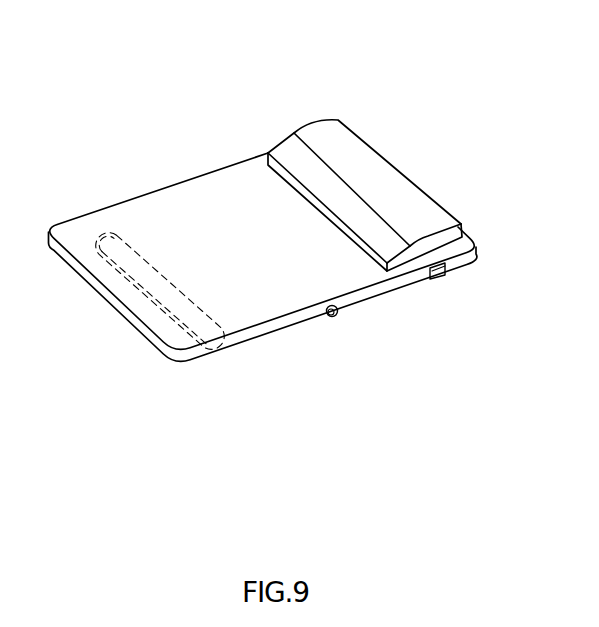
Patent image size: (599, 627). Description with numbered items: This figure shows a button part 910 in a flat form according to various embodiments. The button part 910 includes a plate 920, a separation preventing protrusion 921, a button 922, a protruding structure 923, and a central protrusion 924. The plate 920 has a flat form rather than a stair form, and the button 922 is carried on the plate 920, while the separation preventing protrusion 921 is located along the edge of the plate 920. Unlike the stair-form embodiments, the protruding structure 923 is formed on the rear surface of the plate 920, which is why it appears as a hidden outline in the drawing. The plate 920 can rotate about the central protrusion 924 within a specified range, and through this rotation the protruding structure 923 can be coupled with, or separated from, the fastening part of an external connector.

The button part 910 is at (362, 105).
The plate 920 is at (193, 200).
The separation preventing protrusion 921 is at (433, 278).
The button 922 is at (387, 183).
The protruding structure 923 is at (183, 330).
The central protrusion 924 is at (332, 318).